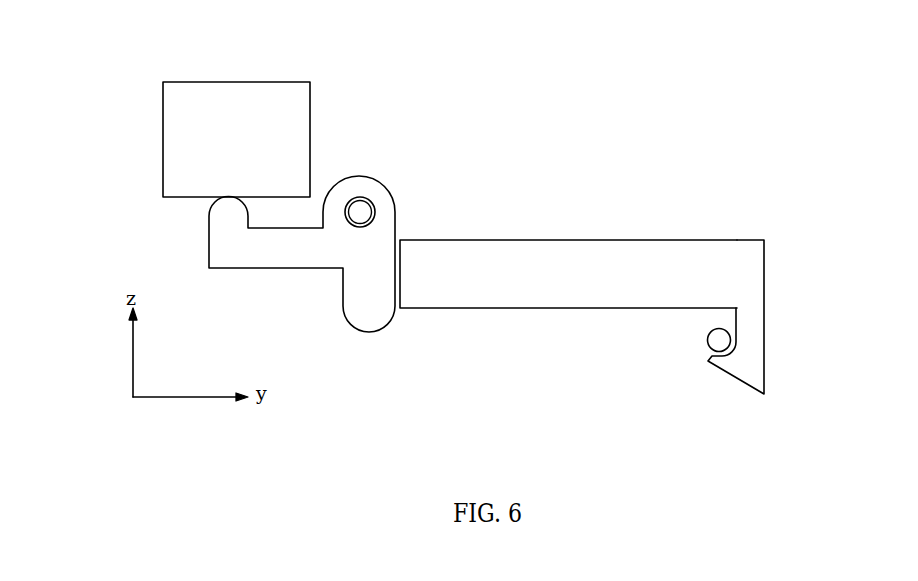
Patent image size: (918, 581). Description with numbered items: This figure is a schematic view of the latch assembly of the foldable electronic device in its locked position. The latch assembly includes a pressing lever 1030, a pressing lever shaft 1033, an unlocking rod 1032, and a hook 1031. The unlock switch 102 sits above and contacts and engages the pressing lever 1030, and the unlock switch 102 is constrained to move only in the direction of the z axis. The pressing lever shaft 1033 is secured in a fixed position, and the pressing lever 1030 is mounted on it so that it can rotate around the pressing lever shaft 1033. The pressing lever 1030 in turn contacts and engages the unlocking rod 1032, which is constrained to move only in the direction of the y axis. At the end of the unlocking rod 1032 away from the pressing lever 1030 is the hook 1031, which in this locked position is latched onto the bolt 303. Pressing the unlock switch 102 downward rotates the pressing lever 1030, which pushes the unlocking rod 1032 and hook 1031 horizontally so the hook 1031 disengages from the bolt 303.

The unlock switch 102 is at (233, 98).
The pressing lever 1030 is at (232, 252).
The hook 1031 is at (750, 320).
The unlocking rod 1032 is at (532, 262).
The pressing lever shaft 1033 is at (358, 210).
The bolt 303 is at (715, 338).